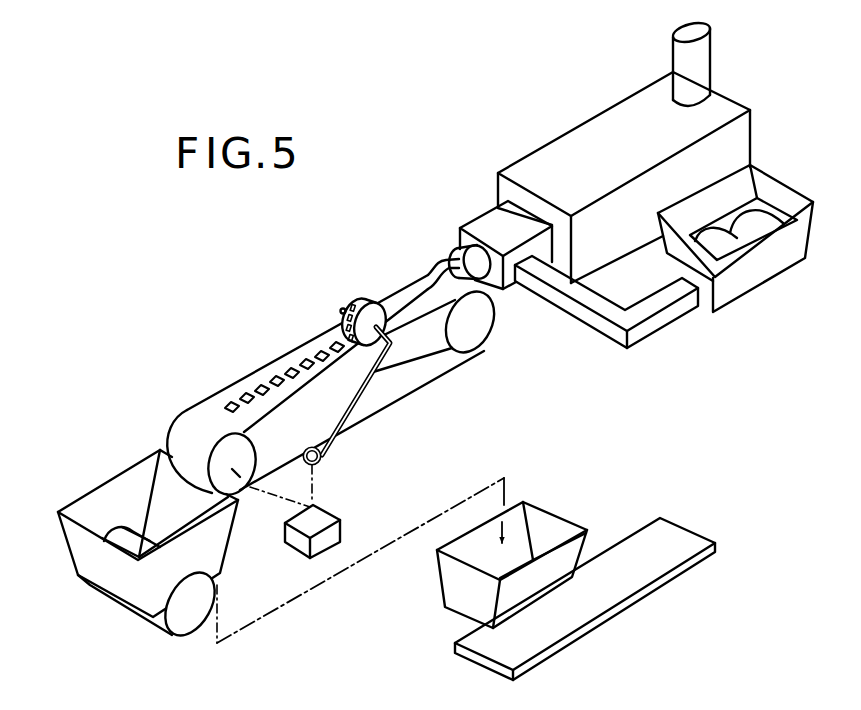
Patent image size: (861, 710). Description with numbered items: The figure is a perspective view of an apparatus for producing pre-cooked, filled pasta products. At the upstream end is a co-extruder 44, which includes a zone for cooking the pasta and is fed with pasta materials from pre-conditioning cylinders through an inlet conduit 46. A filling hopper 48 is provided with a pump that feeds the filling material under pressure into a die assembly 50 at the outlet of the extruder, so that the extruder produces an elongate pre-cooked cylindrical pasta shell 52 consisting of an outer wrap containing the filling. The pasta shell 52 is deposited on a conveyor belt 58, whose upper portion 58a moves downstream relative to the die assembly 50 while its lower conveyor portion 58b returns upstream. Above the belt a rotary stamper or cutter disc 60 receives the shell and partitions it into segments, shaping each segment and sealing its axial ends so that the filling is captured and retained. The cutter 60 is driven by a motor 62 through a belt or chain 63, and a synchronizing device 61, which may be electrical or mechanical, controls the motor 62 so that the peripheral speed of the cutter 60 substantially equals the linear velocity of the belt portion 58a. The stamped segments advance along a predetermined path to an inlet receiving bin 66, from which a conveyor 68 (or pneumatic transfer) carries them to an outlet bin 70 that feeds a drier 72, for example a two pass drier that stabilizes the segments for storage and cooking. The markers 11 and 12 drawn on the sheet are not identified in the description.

The section line 11- 11 is at (195, 314).
The section line 12- 12 is at (371, 232).
The co-extruder 44 is at (575, 120).
The inlet conduit 46 is at (702, 71).
The filling hopper 48 is at (751, 303).
The die assembly 50 is at (458, 215).
The pasta shell 52 is at (449, 258).
The conveyor belt 58 is at (161, 421).
The upper portion 58a is at (229, 402).
The lower conveyor portion 58b is at (447, 368).
The rotary stamper or cutter disc 60 is at (338, 306).
The synchronizing device 61 is at (296, 546).
The motor 62 is at (318, 463).
The belt or chain 63 is at (380, 368).
The inlet receiving bin 66 is at (84, 592).
The conveyor 68 is at (366, 563).
The outlet bin 70 is at (594, 523).
The drier 72 is at (641, 617).